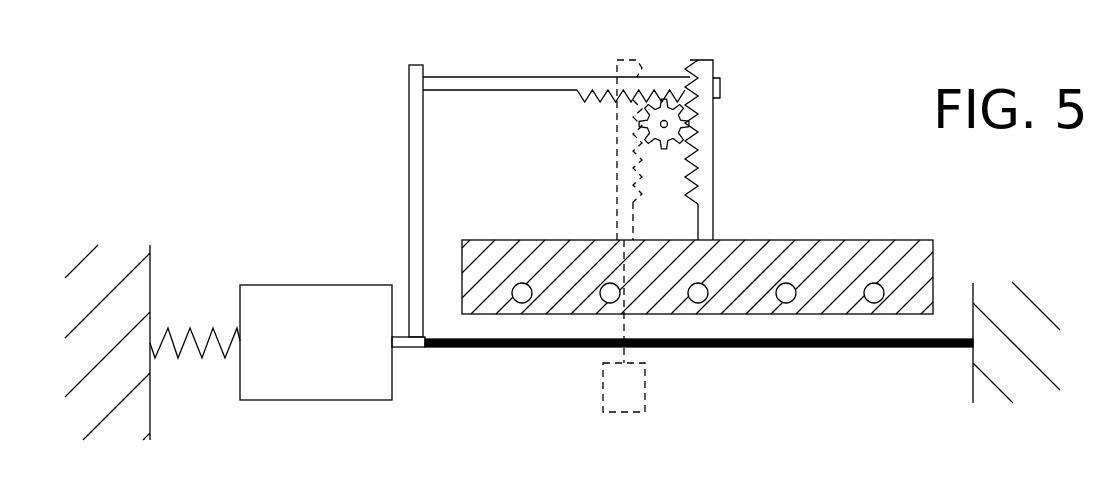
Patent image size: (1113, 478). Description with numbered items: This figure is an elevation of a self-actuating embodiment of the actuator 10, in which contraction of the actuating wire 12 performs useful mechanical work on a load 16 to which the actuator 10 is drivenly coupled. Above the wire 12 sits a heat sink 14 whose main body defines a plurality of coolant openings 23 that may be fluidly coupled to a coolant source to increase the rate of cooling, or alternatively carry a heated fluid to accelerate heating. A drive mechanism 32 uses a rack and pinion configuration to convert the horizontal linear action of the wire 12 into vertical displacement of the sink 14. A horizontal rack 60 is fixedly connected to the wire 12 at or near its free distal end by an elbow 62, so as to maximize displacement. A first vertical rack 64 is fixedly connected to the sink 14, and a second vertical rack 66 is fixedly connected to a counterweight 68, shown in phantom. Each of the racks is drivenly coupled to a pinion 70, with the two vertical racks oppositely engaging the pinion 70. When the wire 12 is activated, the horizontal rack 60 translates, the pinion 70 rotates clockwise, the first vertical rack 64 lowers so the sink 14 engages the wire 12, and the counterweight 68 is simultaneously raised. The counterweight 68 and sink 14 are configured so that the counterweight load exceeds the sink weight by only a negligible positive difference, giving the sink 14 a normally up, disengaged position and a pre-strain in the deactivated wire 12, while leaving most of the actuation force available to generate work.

The actuator 10 is at (246, 140).
The actuating wire 12 is at (868, 348).
The heat sink 14 is at (706, 243).
The load 16 is at (333, 359).
The coolant openings 23 is at (925, 256).
The drive mechanism 32 is at (822, 82).
The horizontal rack 60 is at (665, 76).
The elbow 62 is at (409, 73).
The first vertical rack 64 is at (713, 200).
The second vertical rack 66 is at (615, 193).
The counterweight 68 is at (605, 412).
The pinion 70 is at (690, 125).